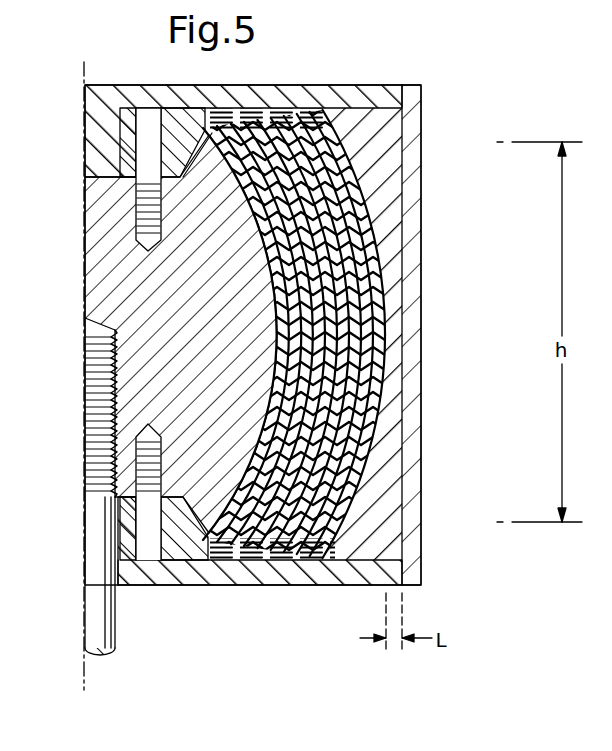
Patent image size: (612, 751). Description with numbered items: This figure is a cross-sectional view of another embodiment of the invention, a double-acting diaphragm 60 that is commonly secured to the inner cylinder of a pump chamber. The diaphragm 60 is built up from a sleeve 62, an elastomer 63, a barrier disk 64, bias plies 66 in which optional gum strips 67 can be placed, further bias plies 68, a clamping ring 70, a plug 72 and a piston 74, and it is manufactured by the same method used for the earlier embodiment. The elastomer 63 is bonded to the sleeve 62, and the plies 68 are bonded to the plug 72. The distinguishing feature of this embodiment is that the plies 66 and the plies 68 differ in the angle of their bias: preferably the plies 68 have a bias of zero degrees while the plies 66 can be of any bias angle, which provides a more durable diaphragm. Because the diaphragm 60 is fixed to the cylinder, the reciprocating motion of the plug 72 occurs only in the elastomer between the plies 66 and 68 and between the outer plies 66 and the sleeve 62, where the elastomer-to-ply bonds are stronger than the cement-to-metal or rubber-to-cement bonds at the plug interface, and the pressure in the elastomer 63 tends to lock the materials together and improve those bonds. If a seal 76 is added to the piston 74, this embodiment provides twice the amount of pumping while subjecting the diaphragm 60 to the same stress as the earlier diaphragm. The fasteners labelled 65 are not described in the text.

The double-acting diaphragm 60 is at (384, 49).
The sleeve 62 is at (422, 202).
The elastomer 63 is at (392, 243).
The barrier disk 64 is at (320, 93).
The bolts 65 is at (140, 220).
The bias plies 66 is at (303, 138).
The gum strips 67 is at (357, 323).
The bias plies 68 is at (228, 160).
The clamping ring 70 is at (128, 140).
The plug 72 is at (100, 258).
The piston 74 is at (118, 634).
The seal 76 is at (120, 587).